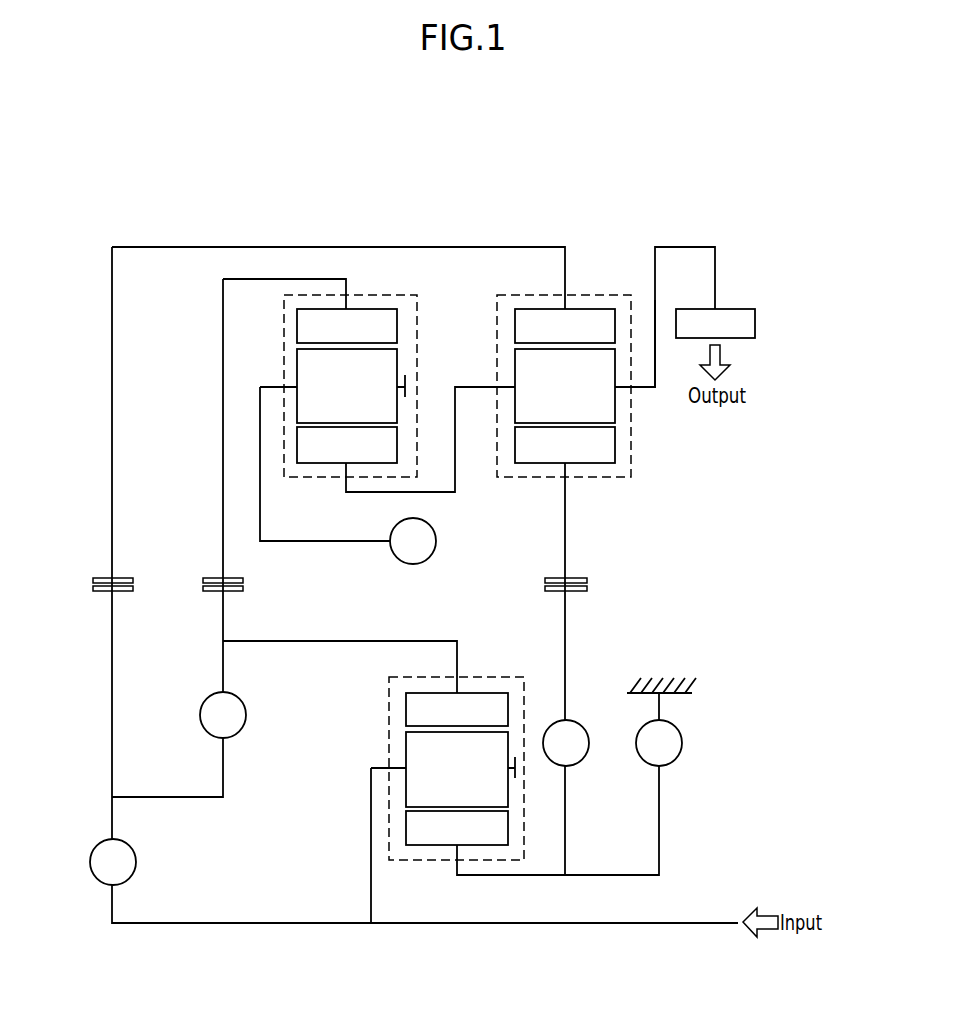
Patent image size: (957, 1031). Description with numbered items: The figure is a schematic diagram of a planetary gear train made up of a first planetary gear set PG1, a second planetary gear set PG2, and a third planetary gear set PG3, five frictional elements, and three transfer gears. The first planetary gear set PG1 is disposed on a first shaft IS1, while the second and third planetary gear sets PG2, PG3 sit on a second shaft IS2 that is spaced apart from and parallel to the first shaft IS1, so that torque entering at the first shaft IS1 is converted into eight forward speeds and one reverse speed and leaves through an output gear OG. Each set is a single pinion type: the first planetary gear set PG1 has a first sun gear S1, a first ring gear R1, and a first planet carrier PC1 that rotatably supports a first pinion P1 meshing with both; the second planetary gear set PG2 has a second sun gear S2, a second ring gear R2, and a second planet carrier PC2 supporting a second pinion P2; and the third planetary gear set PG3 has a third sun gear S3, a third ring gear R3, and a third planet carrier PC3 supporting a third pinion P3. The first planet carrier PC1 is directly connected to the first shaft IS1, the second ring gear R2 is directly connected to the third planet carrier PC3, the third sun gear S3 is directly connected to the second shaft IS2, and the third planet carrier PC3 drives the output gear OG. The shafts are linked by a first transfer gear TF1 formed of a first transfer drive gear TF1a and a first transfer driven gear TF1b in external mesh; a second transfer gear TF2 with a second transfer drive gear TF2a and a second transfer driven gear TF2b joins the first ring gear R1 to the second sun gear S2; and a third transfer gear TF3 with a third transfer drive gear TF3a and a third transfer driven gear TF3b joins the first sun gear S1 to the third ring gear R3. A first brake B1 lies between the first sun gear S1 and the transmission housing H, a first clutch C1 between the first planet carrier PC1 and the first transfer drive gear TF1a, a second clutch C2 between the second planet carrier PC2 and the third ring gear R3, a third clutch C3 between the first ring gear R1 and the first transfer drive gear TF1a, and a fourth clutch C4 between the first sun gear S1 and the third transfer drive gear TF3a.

The first planetary gear set PG1 is at (426, 876).
The second planetary gear set PG2 is at (330, 252).
The third planetary gear set PG3 is at (593, 262).
The first sun gear S1 is at (457, 828).
The first pinion P1 is at (457, 769).
The first ring gear R1 is at (457, 709).
The second sun gear S2 is at (347, 326).
The second pinion P2 is at (347, 386).
The second ring gear R2 is at (347, 445).
The third sun gear S3 is at (565, 326).
The third pinion P3 is at (565, 386).
The third ring gear R3 is at (565, 445).
The first planet carrier PC1 is at (378, 767).
The second planet carrier PC2 is at (268, 385).
The third planet carrier PC3 is at (648, 390).
The first shaft IS1 is at (583, 926).
The second shaft IS2 is at (421, 246).
The output gear OG is at (715, 324).
The first transfer gear TF1 is at (155, 548).
The first transfer drive gear TF1a is at (135, 592).
The first transfer driven gear TF1b is at (128, 578).
The second transfer gear TF2 is at (281, 587).
The second transfer drive gear TF2a is at (260, 601).
The second transfer driven gear TF2b is at (243, 578).
The third transfer gear TF3 is at (623, 587).
The third transfer drive gear TF3a is at (602, 600).
The third transfer driven gear TF3b is at (587, 578).
The first clutch C1 is at (113, 862).
The second clutch C2 is at (413, 541).
The third clutch C3 is at (223, 715).
The fourth clutch C4 is at (566, 743).
The first brake B1 is at (659, 743).
The transmission housing H is at (664, 690).